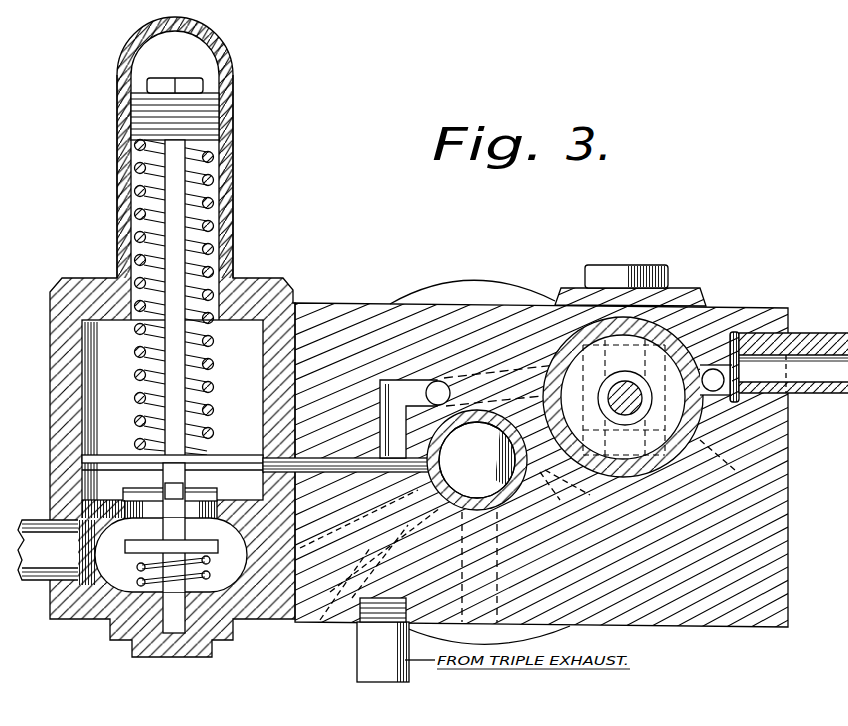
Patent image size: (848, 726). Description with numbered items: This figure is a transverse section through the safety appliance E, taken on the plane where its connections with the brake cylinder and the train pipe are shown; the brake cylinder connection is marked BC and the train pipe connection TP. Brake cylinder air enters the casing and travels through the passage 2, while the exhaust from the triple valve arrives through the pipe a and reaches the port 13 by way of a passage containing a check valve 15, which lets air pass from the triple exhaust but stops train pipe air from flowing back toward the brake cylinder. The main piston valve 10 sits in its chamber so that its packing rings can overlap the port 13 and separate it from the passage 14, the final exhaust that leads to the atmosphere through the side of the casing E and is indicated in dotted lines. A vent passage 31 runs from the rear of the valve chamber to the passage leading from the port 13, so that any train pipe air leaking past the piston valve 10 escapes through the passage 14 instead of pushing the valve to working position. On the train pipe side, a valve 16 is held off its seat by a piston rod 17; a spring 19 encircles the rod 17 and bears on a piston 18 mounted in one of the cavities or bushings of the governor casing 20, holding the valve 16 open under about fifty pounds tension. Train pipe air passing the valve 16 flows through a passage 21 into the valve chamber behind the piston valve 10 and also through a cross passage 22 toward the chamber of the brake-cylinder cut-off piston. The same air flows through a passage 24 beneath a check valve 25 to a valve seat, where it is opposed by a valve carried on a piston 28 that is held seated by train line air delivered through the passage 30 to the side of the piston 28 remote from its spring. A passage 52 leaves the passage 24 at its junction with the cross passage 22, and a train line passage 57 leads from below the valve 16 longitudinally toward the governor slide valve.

The passage 2 is at (737, 346).
The piston valve 10 is at (477, 460).
The port 13 is at (380, 453).
The passage 14 is at (496, 577).
The check valve 15 is at (384, 548).
The valve 16 is at (183, 555).
The piston rod 17 is at (180, 397).
The piston 18 is at (228, 457).
The spring 19 is at (137, 368).
The governor casing 20 is at (62, 348).
The passage 21 is at (294, 478).
The cross passage 22 is at (616, 400).
The passage 24 is at (600, 486).
The check valve 25 is at (684, 462).
The piston 28 is at (662, 362).
The passage 30 is at (502, 388).
The vent passage 31 is at (477, 460).
The passage 52 is at (282, 640).
The train line passage 57 is at (106, 570).
The safety appliance E is at (336, 318).
The pipe a is at (42, 568).
The train pipe TP is at (35, 526).
The brake cylinder pipe BC is at (828, 309).